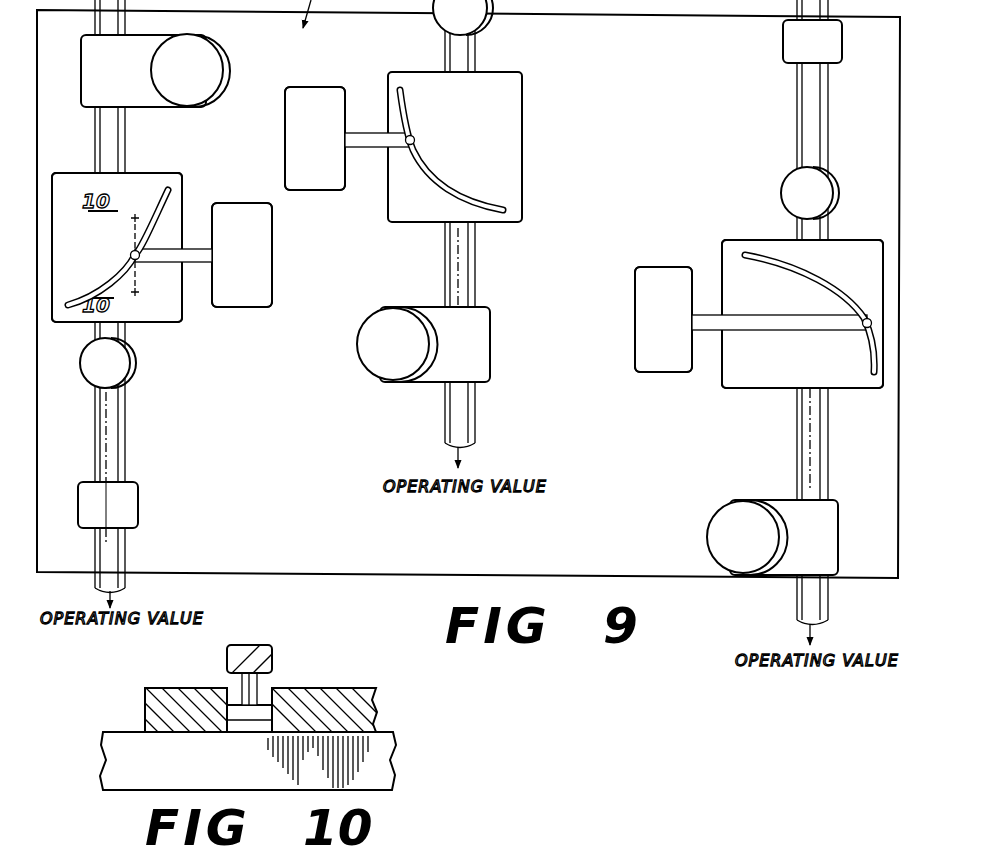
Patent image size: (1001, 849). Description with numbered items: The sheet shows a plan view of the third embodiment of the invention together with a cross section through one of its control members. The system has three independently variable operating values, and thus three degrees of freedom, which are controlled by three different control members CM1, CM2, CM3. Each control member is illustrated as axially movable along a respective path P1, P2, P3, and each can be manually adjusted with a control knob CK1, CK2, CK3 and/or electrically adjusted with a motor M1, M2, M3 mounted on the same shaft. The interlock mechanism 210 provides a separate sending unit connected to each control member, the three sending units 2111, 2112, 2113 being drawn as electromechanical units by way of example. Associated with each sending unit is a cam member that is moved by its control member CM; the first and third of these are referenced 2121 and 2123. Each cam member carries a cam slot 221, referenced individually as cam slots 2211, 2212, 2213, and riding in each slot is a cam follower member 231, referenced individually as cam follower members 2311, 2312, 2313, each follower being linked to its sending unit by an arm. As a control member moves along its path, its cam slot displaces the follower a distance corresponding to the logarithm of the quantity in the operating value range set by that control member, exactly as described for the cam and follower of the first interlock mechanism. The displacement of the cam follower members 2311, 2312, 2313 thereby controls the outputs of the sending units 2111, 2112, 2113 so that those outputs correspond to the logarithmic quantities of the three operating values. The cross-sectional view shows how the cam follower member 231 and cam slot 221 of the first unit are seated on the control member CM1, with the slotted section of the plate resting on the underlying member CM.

In FIG. 10, the interlock mechanism 210 is at (300, 663).
In FIG. 9, the first sending unit 2111 is at (242, 308).
In FIG. 9, the second sending unit 2112 is at (292, 143).
In FIG. 9, the third sending unit 2113 is at (640, 307).
In FIG. 9, the first cam member 2121 is at (160, 176).
In FIG. 9, the third cam member 2123 is at (832, 255).
In FIG. 10, the cam slot 221 is at (268, 698).
In FIG. 9, the first cam slot 2211 is at (100, 290).
In FIG. 10, the first cam slot 2211 is at (238, 700).
In FIG. 9, the second cam slot 2212 is at (452, 188).
In FIG. 9, the third cam slot 2213 is at (809, 313).
In FIG. 10, the cam follower member 231 is at (226, 652).
In FIG. 9, the first cam follower member 2311 is at (148, 263).
In FIG. 10, the first cam follower member 2311 is at (260, 660).
In FIG. 9, the second cam follower member 2312 is at (358, 146).
In FIG. 9, the third cam follower member 2313 is at (735, 326).
In FIG. 9, the motor M1 is at (218, 66).
In FIG. 9, the motor M2 is at (368, 363).
In FIG. 9, the motor M3 is at (717, 520).
In FIG. 9, the control knob CK1 is at (125, 364).
In FIG. 9, the control knob CK2 is at (463, 17).
In FIG. 9, the control knob CK3 is at (795, 192).
In FIG. 10, the control member CM is at (387, 730).
In FIG. 9, the first control member CM1 is at (123, 460).
In FIG. 10, the first control member CM1 is at (128, 748).
In FIG. 9, the second control member CM2 is at (478, 278).
In FIG. 9, the third control member CM3 is at (796, 432).
In FIG. 9, the path P1 is at (106, 446).
In FIG. 9, the path P2 is at (458, 238).
In FIG. 9, the path P3 is at (815, 455).